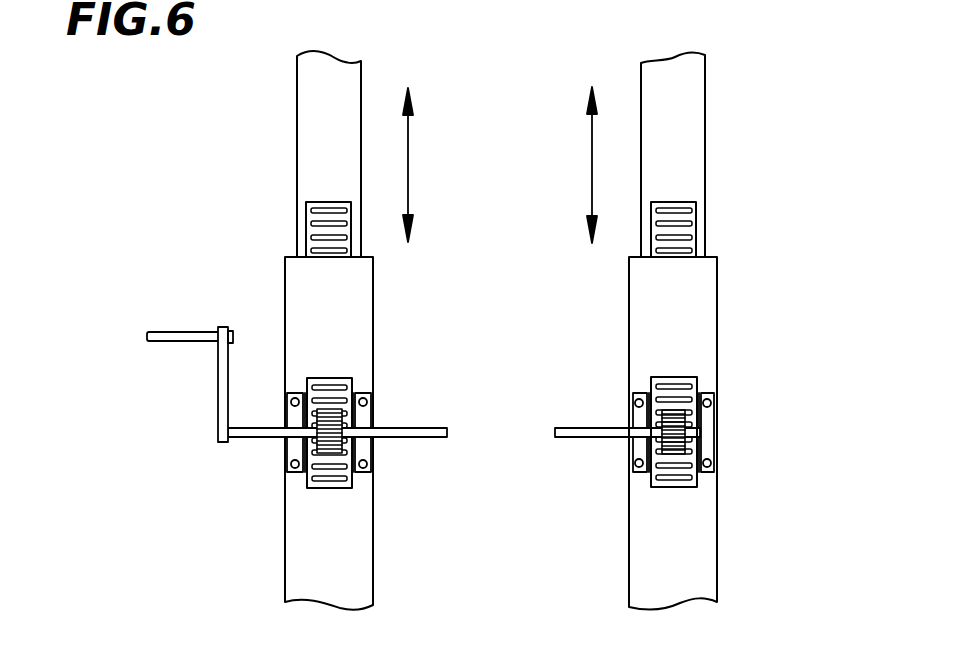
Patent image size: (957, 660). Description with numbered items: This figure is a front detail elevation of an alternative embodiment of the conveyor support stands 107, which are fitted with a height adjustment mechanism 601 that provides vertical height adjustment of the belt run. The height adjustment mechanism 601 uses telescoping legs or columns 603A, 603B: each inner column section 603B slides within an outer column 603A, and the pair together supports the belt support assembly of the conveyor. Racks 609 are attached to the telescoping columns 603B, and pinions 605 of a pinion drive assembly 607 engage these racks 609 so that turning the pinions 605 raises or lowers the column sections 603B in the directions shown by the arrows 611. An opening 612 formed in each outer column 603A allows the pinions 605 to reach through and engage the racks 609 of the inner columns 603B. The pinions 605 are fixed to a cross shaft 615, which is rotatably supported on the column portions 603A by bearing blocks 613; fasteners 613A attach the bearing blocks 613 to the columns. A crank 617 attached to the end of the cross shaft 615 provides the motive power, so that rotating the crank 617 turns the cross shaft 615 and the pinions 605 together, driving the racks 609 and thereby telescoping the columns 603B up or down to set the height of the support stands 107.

The support stands 107 is at (742, 224).
The height adjustment mechanism 601 is at (138, 286).
The telescoping columns 603A is at (373, 332).
The telescoping columns 603B is at (297, 124).
The pinions 605 is at (367, 423).
The pinion drive assembly 607 is at (158, 488).
The racks 609 is at (351, 238).
The arrows 611 is at (592, 182).
The opening 612 is at (330, 377).
The bearing blocks 613 is at (290, 467).
The fasteners 613A is at (715, 467).
The cross shaft 615 is at (558, 437).
The crank 617 is at (218, 387).